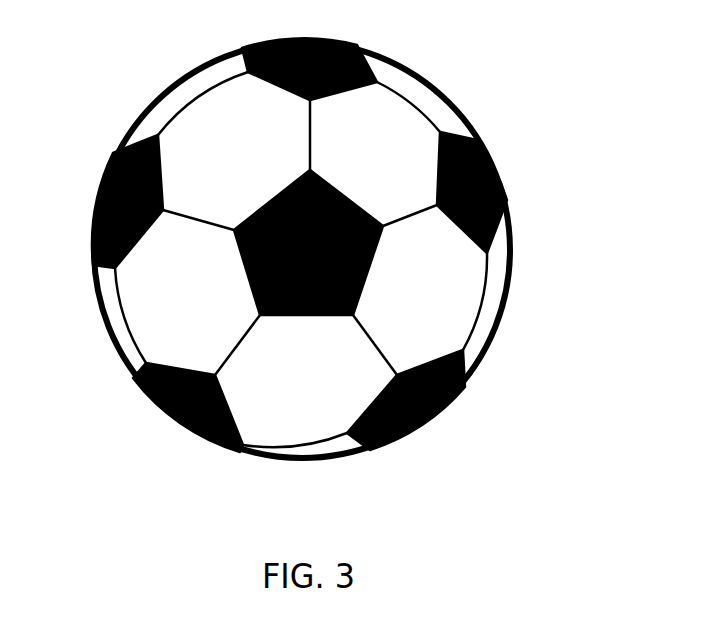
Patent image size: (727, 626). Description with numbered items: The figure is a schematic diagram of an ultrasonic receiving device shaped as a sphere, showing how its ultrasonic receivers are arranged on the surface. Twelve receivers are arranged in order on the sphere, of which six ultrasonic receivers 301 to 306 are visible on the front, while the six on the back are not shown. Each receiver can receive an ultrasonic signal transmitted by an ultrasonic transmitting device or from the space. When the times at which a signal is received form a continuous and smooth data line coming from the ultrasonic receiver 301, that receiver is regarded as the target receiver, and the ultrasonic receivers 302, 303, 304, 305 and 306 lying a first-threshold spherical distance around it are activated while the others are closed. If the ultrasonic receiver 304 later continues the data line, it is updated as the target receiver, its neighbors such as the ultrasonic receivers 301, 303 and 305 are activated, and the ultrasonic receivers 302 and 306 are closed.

The ultrasonic receiver 301 is at (236, 256).
The ultrasonic receiver 302 is at (92, 193).
The ultrasonic receiver 303 is at (357, 45).
The ultrasonic receiver 304 is at (509, 200).
The ultrasonic receiver 305 is at (430, 423).
The ultrasonic receiver 306 is at (158, 412).